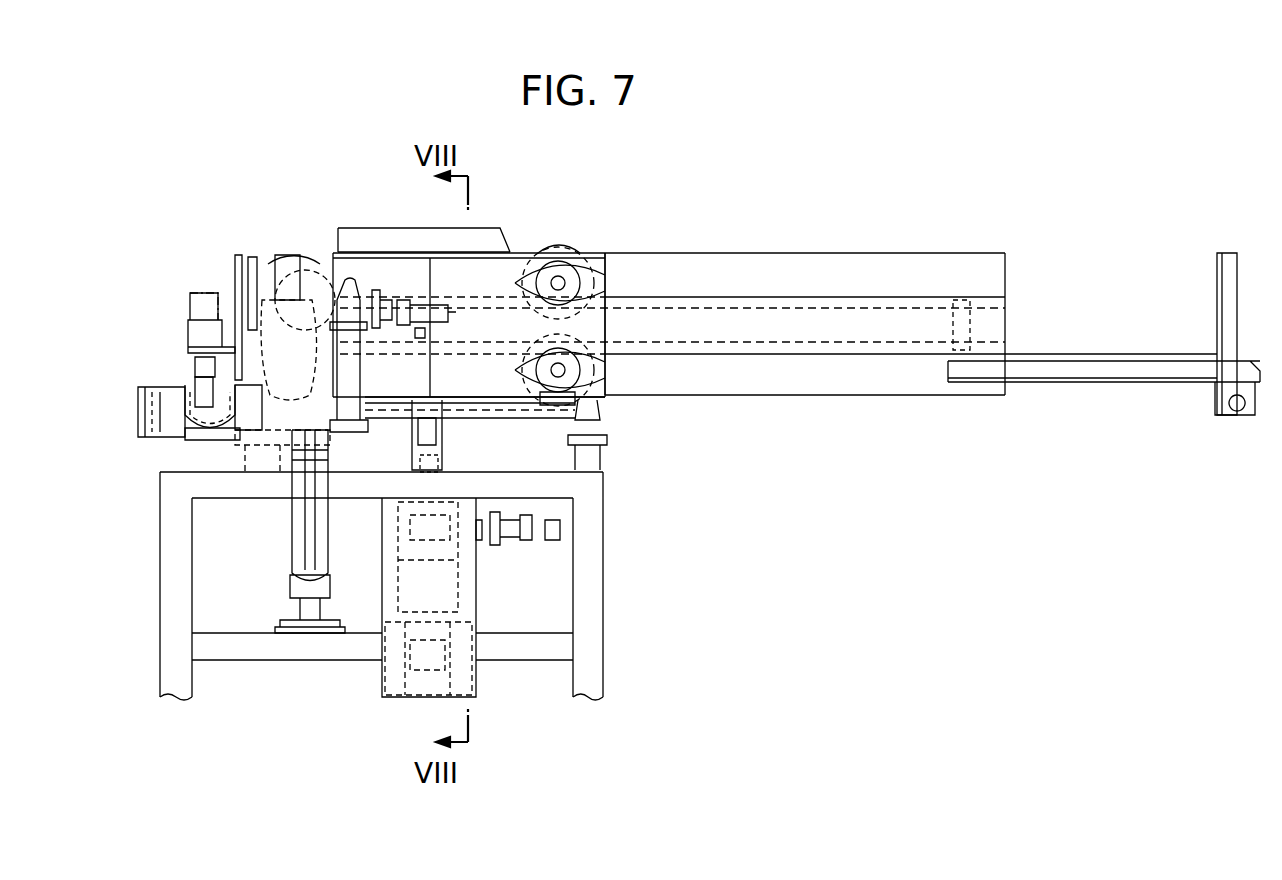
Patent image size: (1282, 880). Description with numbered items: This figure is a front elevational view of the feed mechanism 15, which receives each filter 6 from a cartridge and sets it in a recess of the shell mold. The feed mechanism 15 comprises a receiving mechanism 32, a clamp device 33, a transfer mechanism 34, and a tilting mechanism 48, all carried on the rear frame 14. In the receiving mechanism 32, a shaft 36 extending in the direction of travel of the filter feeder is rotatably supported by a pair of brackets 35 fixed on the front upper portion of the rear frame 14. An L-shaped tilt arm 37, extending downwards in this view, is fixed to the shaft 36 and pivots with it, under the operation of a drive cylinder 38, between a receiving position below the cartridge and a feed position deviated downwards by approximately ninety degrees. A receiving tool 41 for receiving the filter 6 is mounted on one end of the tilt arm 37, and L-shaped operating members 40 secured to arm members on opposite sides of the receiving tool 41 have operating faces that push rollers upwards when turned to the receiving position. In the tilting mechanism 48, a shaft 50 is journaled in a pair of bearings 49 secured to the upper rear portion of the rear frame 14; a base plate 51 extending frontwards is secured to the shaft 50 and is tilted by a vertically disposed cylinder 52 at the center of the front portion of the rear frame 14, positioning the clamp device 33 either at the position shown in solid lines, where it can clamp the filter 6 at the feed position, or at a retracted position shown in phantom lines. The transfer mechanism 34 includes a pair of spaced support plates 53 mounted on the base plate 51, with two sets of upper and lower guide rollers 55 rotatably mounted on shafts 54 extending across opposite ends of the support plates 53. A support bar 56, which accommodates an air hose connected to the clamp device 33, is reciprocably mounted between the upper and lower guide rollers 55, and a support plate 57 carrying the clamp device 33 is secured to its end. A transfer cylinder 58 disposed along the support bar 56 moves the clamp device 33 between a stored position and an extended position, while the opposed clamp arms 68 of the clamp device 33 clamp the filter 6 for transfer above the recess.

The rear frame 14 is at (604, 514).
The feed mechanism 15 is at (728, 213).
The receiving mechanism 32 is at (190, 478).
The clamp device 33 is at (184, 322).
The transfer mechanism 34 is at (773, 273).
The brackets 35 is at (258, 262).
The shaft 36 is at (306, 262).
The tilt arm 37 is at (414, 343).
The drive cylinder 38 is at (330, 530).
The operating member 40 is at (156, 386).
The receiving tool 41 is at (208, 435).
The tilting mechanism 48 is at (468, 550).
The bearings 49 is at (600, 420).
The shaft 50 is at (538, 420).
The base plate 51 is at (458, 414).
The cylinder 52 is at (400, 582).
The support plates 53 is at (497, 255).
The shafts 54 is at (572, 266).
The guide rollers 55 is at (562, 252).
The support bar 56 is at (880, 296).
The support plate 57 is at (228, 290).
The transfer cylinder 58 is at (666, 300).
The filter 6 is at (198, 390).
The clamp arms 68 is at (212, 428).